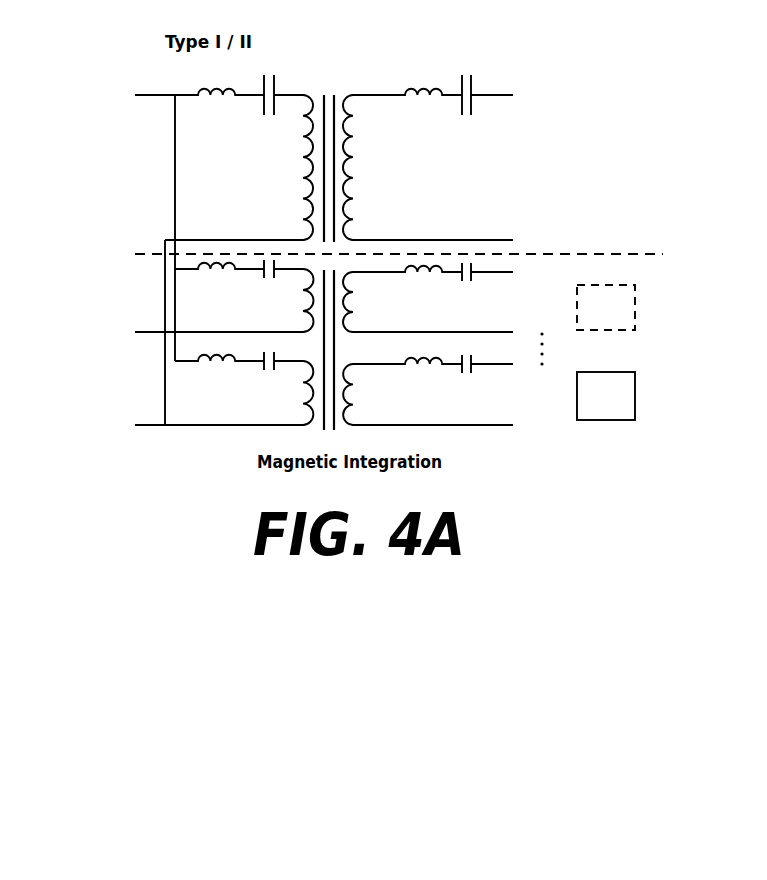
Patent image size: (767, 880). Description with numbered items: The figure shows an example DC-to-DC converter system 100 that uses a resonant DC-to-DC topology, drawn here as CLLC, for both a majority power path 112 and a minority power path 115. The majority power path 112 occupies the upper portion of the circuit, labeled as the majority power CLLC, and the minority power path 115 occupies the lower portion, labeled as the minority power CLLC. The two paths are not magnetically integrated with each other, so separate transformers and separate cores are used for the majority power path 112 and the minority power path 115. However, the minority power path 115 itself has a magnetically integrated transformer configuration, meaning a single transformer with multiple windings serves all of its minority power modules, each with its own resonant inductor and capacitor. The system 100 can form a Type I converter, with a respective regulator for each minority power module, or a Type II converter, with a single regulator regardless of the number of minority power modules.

The DC-to-DC converter system 100 is at (556, 47).
The majority power path 112 is at (556, 117).
The minority power path 115 is at (566, 455).